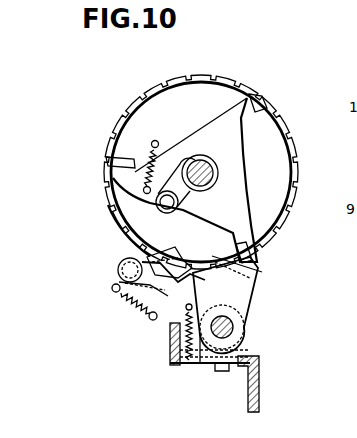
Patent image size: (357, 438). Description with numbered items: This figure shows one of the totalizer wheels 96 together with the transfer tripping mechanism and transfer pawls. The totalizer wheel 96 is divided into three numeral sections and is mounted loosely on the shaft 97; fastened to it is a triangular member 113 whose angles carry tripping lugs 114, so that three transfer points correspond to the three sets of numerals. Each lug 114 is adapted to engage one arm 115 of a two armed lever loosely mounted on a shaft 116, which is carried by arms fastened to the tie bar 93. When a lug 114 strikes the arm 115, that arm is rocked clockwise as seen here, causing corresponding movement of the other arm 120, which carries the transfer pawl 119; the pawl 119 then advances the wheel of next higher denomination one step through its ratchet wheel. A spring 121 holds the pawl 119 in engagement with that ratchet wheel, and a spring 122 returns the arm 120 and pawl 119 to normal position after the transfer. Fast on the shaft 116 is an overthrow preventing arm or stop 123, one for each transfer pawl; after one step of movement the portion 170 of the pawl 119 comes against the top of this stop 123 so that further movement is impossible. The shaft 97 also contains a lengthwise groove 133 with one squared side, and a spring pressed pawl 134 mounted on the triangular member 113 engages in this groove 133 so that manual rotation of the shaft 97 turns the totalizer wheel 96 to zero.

The totalizer wheel 96 is at (206, 76).
The triangular member 113 is at (235, 186).
The shaft 97 is at (204, 162).
The spring pressed pawl 134 is at (145, 206).
The groove 133 is at (176, 161).
The tripping lug 114 is at (110, 170).
The transfer pawl 119 is at (177, 262).
The arm 120 is at (166, 318).
The spring 121 is at (145, 300).
The portion of the pawl 170 is at (186, 283).
The shaft 116 is at (236, 326).
The arm 115 is at (254, 268).
The overthrow preventing arm 123 is at (250, 284).
The spring 122 is at (195, 364).
The tie bar 93 is at (262, 381).